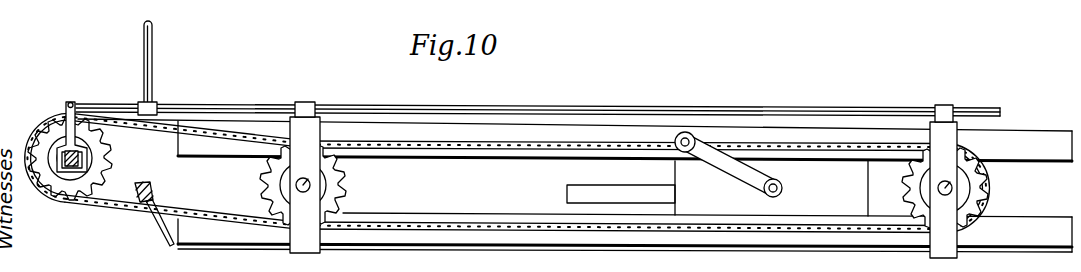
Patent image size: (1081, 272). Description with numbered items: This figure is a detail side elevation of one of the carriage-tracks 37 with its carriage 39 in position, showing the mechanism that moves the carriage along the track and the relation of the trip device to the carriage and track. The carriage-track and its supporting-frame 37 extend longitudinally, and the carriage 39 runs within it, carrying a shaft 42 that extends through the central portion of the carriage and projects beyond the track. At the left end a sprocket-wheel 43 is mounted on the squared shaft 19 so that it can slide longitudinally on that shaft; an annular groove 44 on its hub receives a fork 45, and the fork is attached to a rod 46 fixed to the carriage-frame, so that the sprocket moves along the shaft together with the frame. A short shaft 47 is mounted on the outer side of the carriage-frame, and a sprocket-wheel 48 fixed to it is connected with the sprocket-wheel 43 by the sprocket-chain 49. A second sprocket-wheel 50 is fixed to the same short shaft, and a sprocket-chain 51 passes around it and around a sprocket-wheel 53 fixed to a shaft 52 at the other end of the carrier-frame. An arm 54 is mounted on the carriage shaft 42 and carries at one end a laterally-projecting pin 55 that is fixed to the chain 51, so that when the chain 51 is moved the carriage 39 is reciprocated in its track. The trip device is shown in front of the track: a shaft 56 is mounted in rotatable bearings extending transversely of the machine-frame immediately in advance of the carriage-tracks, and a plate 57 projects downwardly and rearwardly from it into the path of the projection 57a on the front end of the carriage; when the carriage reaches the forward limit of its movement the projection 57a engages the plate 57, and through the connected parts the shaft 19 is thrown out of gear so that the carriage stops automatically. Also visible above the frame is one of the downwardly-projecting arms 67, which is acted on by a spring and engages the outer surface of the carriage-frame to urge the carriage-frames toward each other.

The shaft 19 is at (84, 160).
The carriage-tracks and supporting-frames 37 is at (1014, 139).
The carriage 39 is at (771, 188).
The shaft 42 is at (782, 188).
The sprocket-wheel 43 is at (60, 128).
The annular groove 44 is at (66, 173).
The fork 45 is at (75, 104).
The rod 46 is at (414, 108).
The short shaft 47 is at (305, 177).
The sprocket-wheel 48 is at (264, 176).
The sprocket-chain 49 is at (200, 216).
The second sprocket-wheel 50 is at (349, 184).
The sprocket-chain 51 is at (707, 191).
The shaft 52 is at (943, 181).
The sprocket-wheel 53 is at (968, 208).
The arm 54 is at (727, 170).
The laterally-projecting pin 55 is at (688, 140).
The shaft 56 is at (152, 176).
The plate 57 is at (171, 247).
The projection 57a is at (567, 195).
The downwardly-projecting arm 67 is at (158, 56).